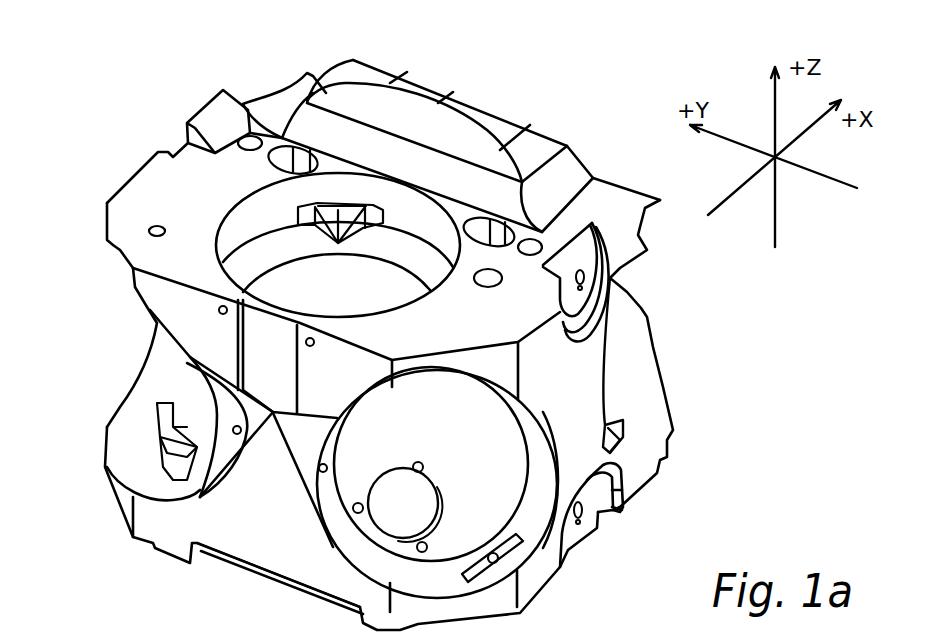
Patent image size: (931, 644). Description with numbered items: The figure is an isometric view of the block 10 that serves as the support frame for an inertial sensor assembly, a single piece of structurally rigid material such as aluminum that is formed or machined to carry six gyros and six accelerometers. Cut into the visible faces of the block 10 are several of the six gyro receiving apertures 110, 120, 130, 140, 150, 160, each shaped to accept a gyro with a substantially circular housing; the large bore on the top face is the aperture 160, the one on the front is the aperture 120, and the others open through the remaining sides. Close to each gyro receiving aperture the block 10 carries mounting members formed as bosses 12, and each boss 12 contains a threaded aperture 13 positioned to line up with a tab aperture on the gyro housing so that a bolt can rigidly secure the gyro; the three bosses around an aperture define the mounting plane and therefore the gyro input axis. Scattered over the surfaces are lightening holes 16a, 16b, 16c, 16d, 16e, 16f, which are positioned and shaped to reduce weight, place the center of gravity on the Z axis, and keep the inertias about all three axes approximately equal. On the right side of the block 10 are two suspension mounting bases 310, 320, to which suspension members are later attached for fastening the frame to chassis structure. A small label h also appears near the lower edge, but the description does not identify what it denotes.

The block 10 is at (528, 604).
The mounting member 12 is at (353, 228).
The threaded aperture 13 is at (340, 212).
The lightening hole 16a is at (240, 150).
The lightening hole 16b is at (268, 163).
The lightening hole 16c is at (470, 219).
The lightening hole 16d is at (488, 288).
The lightening hole 16e is at (533, 255).
The lightening hole 16f is at (157, 236).
The gyro receiving aperture 110 is at (187, 397).
The gyro receiving aperture 120 is at (474, 418).
The gyro receiving aperture 130 is at (447, 68).
The gyro receiving aperture 140 is at (263, 75).
The gyro receiving aperture 150 is at (636, 378).
The gyro receiving aperture 160 is at (361, 302).
The suspension mounting base 310 is at (570, 540).
The suspension mounting base 320 is at (597, 257).
The chamfer groove h is at (218, 556).